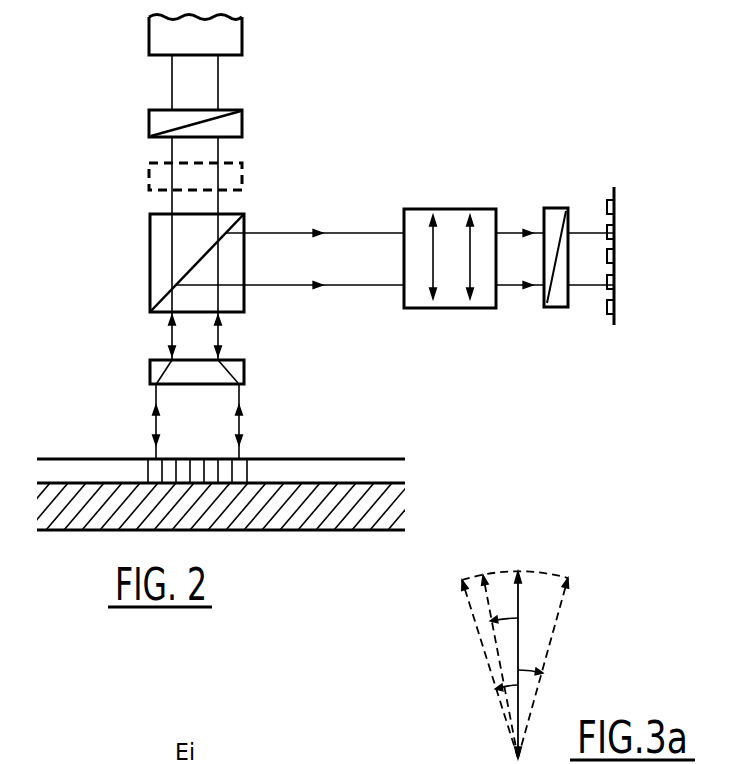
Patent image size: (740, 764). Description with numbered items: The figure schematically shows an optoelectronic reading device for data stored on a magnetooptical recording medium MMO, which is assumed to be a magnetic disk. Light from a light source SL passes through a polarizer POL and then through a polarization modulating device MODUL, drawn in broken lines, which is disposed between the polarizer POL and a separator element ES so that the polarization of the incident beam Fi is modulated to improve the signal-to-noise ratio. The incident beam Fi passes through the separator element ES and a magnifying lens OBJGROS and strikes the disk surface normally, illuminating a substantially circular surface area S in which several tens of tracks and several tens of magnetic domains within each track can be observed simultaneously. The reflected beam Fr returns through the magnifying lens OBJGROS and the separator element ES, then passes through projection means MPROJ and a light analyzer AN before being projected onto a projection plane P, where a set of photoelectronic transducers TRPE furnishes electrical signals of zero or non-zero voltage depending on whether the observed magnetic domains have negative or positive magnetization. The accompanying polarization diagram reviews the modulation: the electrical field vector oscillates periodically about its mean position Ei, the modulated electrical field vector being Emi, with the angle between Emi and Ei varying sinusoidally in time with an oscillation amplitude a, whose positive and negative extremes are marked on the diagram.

In FIG. 2, the light source SL is at (243, 37).
In FIG. 2, the polarizer POL is at (149, 123).
In FIG. 2, the polarization modulating device MODUL is at (243, 178).
In FIG. 2, the separator element ES is at (173, 263).
In FIG. 2, the reflected beam Fr is at (395, 333).
In FIG. 2, the incident beam Fi is at (185, 421).
In FIG. 2, the magnifying lens OBJGROS is at (245, 373).
In FIG. 2, the projection means MPROJ is at (478, 209).
In FIG. 2, the light analyzer AN is at (549, 190).
In FIG. 2, the projection plane P is at (614, 192).
In FIG. 2, the photoelectronic transducers TRPE is at (617, 207).
In FIG. 2, the magnetooptical recording medium MMO is at (390, 468).
In FIG. 2, the surface area S is at (154, 459).
In FIG. 3A, the mean position of the electrical field vector Ei is at (515, 651).
In FIG. 3A, the modulated electrical field vector Emi is at (488, 651).